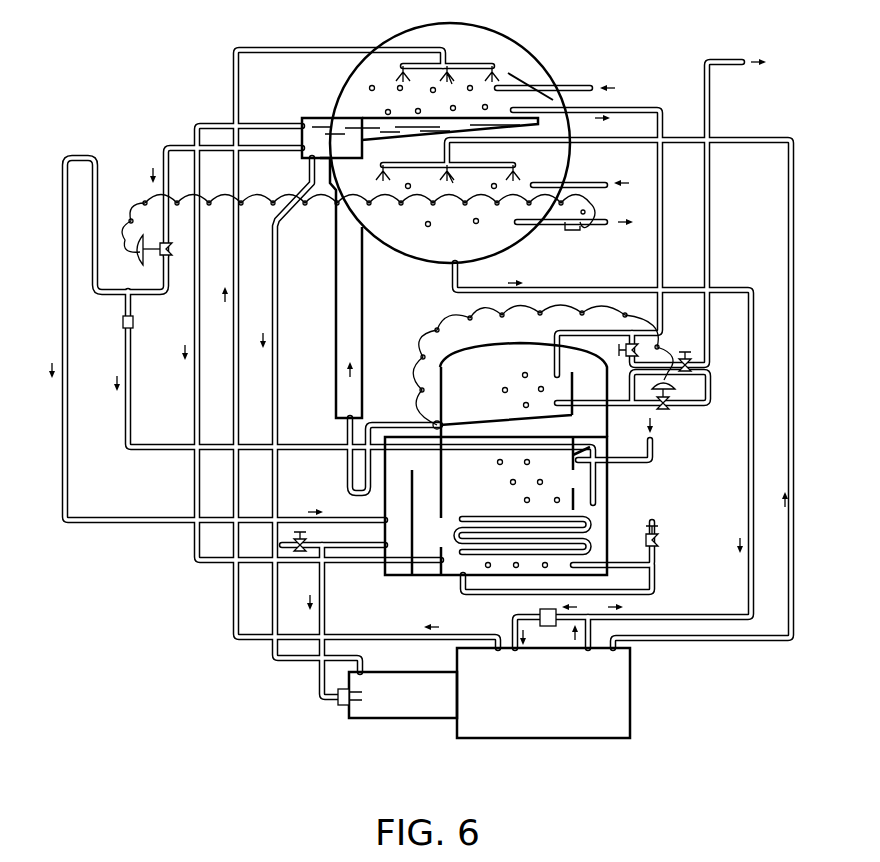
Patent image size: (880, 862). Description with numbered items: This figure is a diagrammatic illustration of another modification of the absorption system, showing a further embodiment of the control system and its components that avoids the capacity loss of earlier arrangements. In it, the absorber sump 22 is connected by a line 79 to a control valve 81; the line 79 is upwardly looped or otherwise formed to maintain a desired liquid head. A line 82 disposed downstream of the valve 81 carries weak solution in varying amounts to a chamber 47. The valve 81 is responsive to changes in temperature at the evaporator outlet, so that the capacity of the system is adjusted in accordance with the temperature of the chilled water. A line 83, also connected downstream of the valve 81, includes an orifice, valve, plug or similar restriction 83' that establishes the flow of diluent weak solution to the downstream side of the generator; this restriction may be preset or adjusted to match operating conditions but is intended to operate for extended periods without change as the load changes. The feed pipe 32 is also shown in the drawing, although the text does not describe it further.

The absorber sump 22 is at (340, 150).
The feed pipe 32 is at (256, 124).
The chamber 47 is at (413, 510).
The line 79 is at (180, 145).
The control valve 81 is at (140, 255).
The line 82 is at (62, 305).
The line 83 is at (360, 397).
The restriction 83' is at (109, 333).